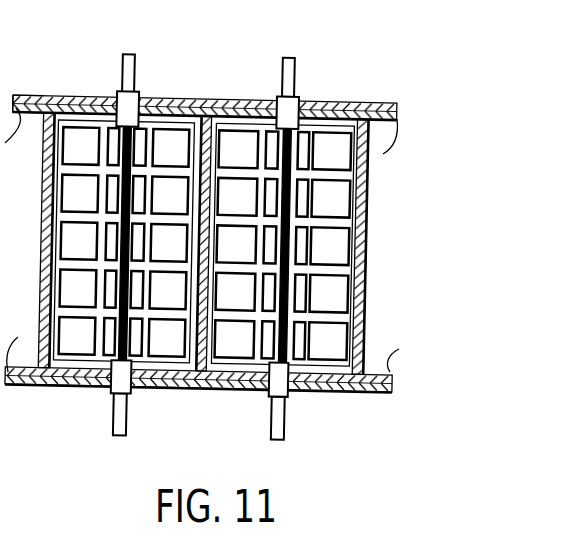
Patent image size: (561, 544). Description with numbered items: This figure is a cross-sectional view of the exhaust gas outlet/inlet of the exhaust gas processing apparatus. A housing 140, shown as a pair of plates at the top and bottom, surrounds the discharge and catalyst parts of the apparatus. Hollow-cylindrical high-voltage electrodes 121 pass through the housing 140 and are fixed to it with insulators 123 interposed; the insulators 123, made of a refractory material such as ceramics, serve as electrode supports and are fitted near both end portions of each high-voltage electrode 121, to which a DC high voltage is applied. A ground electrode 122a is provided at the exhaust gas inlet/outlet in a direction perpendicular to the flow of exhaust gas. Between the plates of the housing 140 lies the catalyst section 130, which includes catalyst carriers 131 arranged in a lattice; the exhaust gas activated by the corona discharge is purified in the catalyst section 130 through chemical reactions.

The high-voltage electrode 121 is at (136, 65).
The ground electrode 122a is at (65, 100).
The insulator 123 is at (118, 98).
The catalyst section 130 is at (372, 200).
The catalyst carrier 131 is at (346, 251).
The housing 140 is at (196, 96).